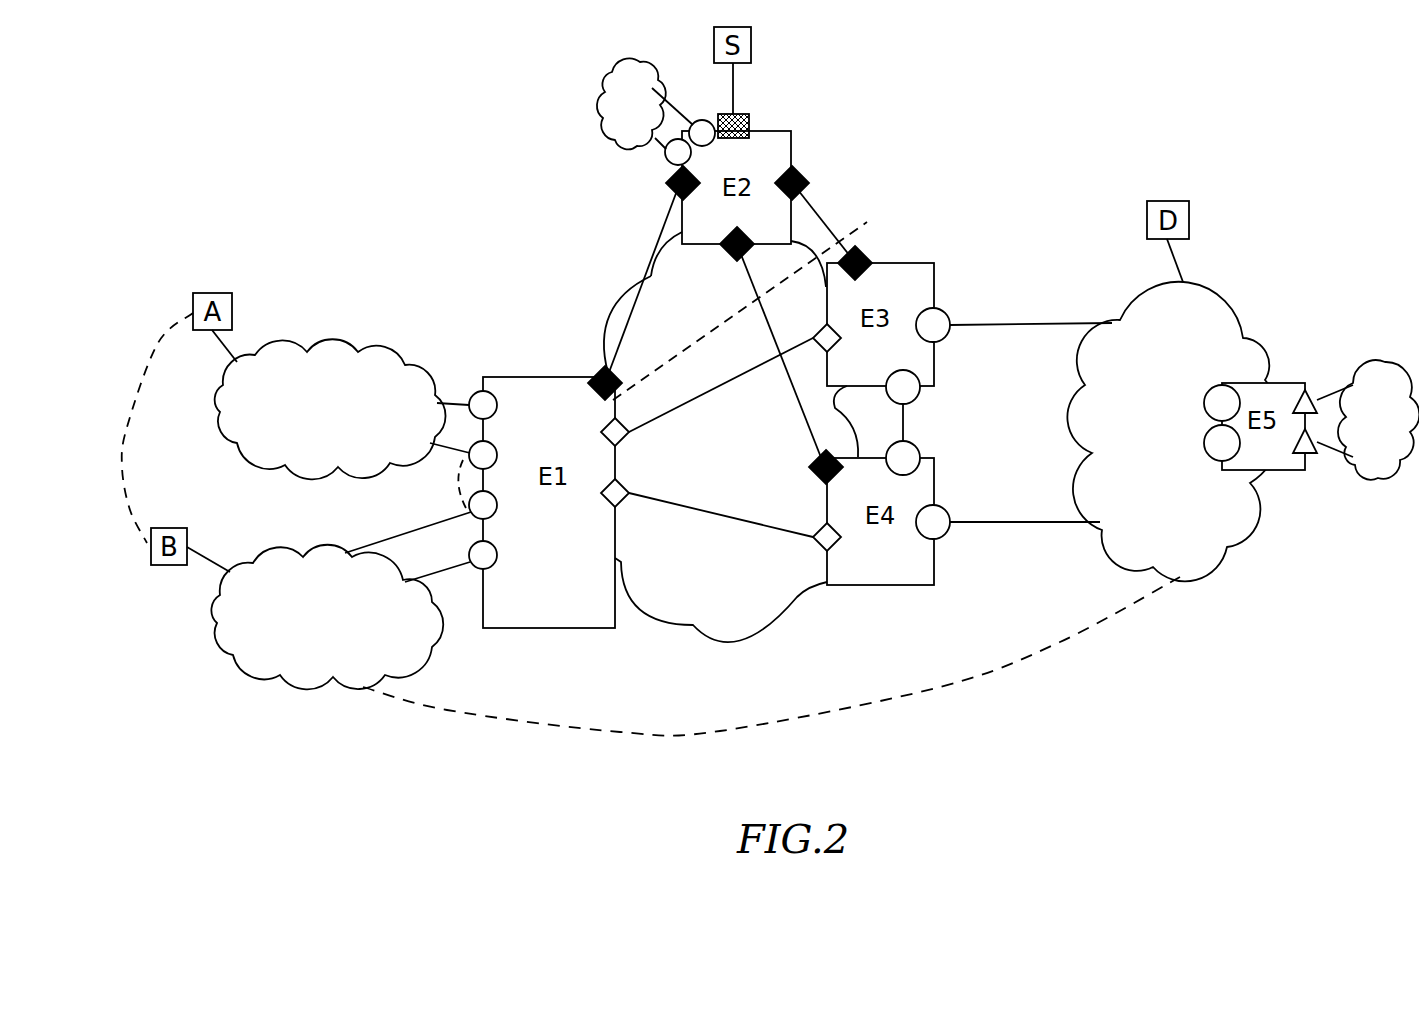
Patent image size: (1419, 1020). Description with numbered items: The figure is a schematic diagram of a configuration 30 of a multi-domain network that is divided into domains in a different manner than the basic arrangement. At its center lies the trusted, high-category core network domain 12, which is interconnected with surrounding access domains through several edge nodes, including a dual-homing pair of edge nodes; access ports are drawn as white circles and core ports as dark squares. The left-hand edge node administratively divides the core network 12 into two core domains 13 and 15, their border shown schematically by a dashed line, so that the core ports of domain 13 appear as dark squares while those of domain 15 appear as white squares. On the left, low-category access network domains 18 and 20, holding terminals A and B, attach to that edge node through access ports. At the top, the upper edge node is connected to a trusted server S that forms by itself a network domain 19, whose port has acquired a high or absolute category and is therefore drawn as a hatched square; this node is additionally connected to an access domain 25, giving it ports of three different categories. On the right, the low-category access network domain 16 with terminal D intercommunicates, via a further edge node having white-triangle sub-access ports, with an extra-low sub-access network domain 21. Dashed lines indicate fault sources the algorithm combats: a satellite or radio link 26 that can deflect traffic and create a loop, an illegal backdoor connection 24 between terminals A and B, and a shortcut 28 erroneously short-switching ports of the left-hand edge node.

The core network domain 12 is at (792, 597).
The core domain 13 is at (740, 327).
The core domain 15 is at (721, 499).
The access network domain 16 is at (1174, 431).
The access network domain 18 is at (330, 409).
The network domain 19 is at (755, 102).
The access domain 20 is at (327, 617).
The sub-access network domain 21 is at (1378, 420).
The illegal connection 24 is at (160, 343).
The access domain 25 is at (645, 103).
The radio link 26 is at (722, 732).
The shortcut 28 is at (443, 485).
The configuration 30 is at (613, 255).